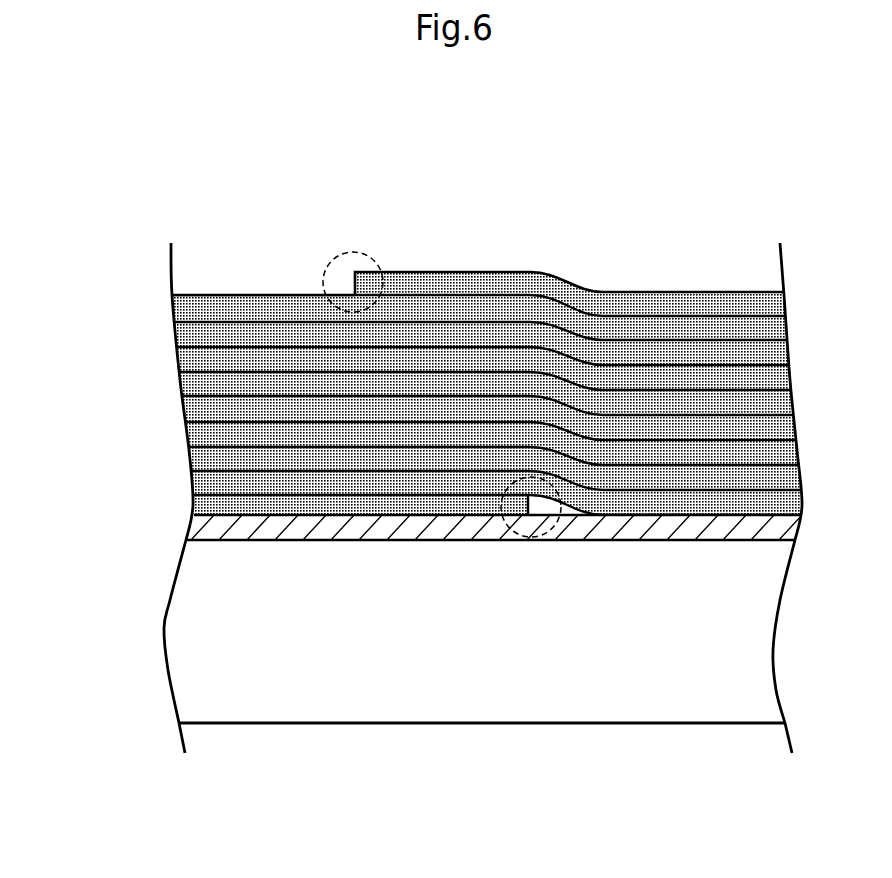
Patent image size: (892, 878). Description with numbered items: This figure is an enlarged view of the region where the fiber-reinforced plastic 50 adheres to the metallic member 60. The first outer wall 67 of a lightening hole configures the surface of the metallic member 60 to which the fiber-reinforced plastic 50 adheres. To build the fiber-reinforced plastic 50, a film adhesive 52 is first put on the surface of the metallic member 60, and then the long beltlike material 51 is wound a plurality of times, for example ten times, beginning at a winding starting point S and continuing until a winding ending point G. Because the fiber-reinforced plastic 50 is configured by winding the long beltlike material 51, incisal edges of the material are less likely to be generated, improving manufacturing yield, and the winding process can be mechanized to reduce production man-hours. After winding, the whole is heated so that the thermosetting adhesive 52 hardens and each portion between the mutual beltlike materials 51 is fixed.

The fiber-reinforced plastic 50 is at (247, 281).
The long beltlike material 51 is at (467, 278).
The film adhesive 52 is at (208, 531).
The first outer wall 67 is at (213, 640).
The metallic member 60 is at (263, 727).
The winding ending point G is at (340, 257).
The winding starting point S is at (572, 514).